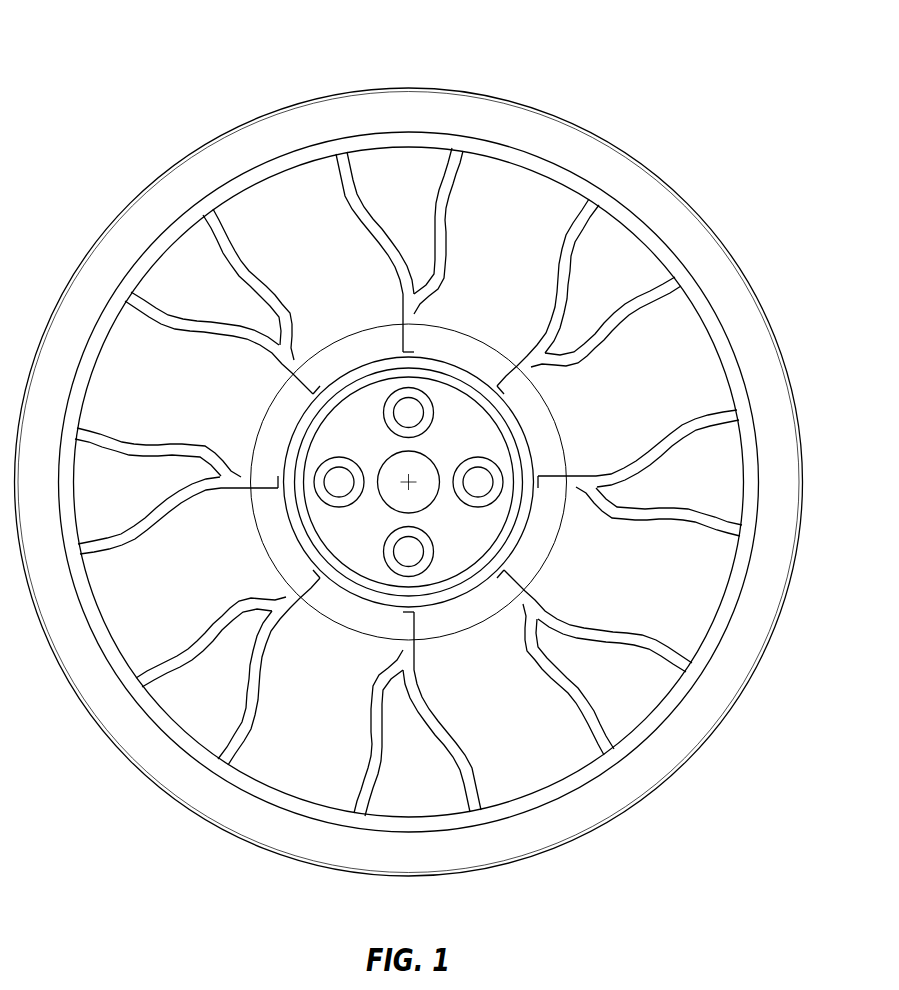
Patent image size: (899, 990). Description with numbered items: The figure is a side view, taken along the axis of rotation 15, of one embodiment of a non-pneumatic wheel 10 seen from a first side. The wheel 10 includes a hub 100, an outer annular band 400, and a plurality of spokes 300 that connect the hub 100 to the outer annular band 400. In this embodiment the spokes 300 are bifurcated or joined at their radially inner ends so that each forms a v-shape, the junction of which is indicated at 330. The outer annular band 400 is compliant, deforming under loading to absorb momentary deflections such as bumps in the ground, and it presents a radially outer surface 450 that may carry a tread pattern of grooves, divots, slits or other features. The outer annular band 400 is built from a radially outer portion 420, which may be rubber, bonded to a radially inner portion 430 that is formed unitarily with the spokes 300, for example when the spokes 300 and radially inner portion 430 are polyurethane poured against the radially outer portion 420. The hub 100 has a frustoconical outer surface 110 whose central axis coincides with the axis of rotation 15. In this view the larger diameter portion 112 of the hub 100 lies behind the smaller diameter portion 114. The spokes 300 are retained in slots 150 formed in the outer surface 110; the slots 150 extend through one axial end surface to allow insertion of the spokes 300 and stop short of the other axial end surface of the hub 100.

The non-pneumatic wheel 10 is at (771, 57).
The axis of rotation 15 is at (428, 477).
The hub 100 is at (413, 486).
The frustoconical outer surface 110 is at (454, 626).
The larger diameter portion 112 is at (473, 337).
The smaller diameter portion 114 is at (290, 522).
The slots 150 is at (567, 520).
The spokes 300 is at (408, 495).
The spoke junction 330 is at (285, 363).
The outer annular band 400 is at (435, 465).
The radially outer portion 420 is at (499, 120).
The radially inner portion 430 is at (512, 153).
The radially outer surface 450 is at (690, 203).